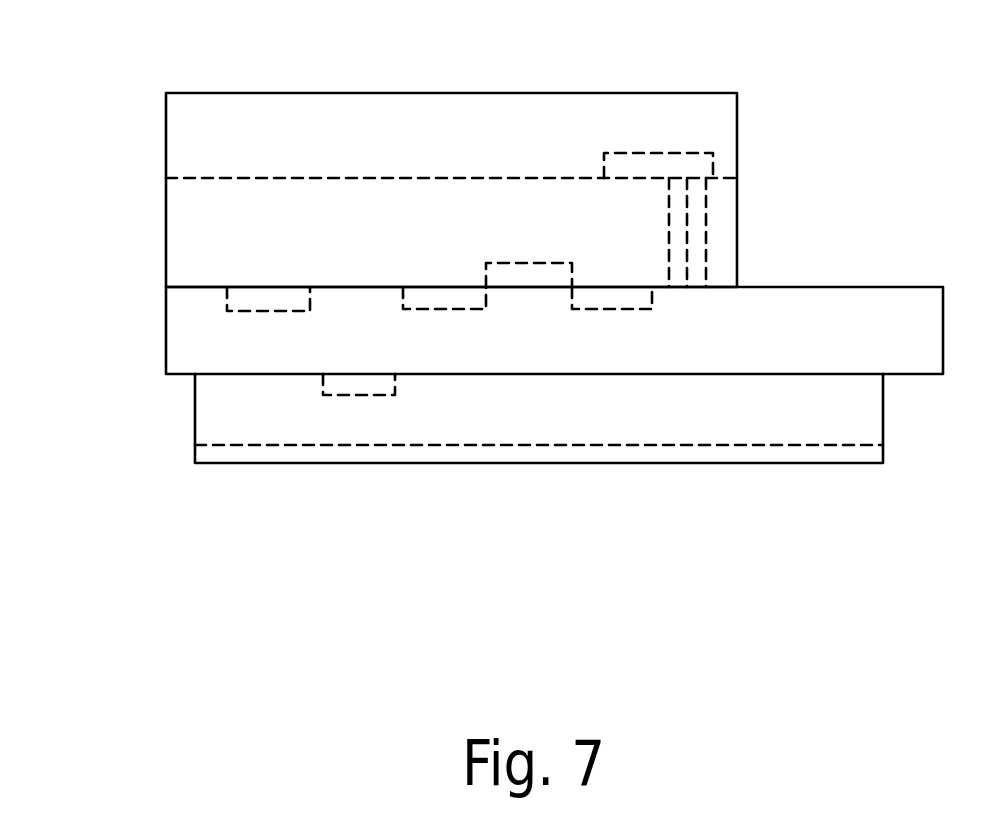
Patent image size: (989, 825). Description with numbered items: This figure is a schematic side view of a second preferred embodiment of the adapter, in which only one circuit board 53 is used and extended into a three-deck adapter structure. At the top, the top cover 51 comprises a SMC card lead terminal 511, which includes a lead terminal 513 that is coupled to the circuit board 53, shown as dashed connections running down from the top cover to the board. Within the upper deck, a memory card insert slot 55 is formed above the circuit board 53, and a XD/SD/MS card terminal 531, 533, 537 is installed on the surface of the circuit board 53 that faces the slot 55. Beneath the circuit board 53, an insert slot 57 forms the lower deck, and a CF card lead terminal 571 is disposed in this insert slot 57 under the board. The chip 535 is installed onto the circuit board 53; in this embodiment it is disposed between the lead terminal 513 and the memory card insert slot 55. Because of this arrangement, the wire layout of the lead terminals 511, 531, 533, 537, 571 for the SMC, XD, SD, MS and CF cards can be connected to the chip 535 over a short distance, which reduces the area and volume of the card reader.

The top cover 51 is at (327, 98).
The SMC card lead terminal 511 is at (700, 168).
The lead terminal 513 is at (705, 243).
The circuit board 53 is at (538, 340).
The XD/SD/MS card terminal 531 is at (243, 300).
The XD/SD/MS card terminal 533 is at (440, 300).
The chip 535 is at (523, 272).
The XD/SD/MS card terminal 537 is at (605, 310).
The slot 55 is at (183, 224).
The insert slot 57 is at (223, 419).
The CF card lead terminal 571 is at (365, 386).